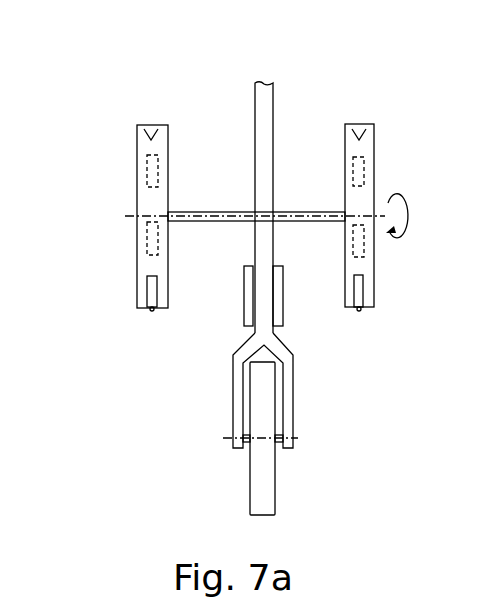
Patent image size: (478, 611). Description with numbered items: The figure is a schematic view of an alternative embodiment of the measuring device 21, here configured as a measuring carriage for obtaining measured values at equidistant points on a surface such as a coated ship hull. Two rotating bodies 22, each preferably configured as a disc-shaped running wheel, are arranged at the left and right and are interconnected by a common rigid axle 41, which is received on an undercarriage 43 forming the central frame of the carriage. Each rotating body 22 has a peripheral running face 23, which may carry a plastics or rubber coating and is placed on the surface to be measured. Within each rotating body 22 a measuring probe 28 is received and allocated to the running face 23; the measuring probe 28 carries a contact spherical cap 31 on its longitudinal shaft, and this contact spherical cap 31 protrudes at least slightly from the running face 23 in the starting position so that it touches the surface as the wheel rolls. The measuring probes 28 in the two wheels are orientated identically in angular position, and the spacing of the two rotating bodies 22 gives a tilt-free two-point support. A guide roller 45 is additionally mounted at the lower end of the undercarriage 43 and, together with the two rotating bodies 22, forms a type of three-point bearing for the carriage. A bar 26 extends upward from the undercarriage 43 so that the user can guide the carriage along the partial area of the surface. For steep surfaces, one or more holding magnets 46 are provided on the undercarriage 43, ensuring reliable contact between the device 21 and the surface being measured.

The device 21 is at (356, 77).
The rotating body 22 is at (116, 159).
The running face 23 is at (146, 128).
The bar 26 is at (266, 122).
The measuring probe 28 is at (170, 284).
The contact spherical cap 31 is at (150, 318).
The axle 41 is at (207, 212).
The undercarriage 43 is at (286, 238).
The guide roller 45 is at (290, 485).
The holding magnet 46 is at (246, 297).